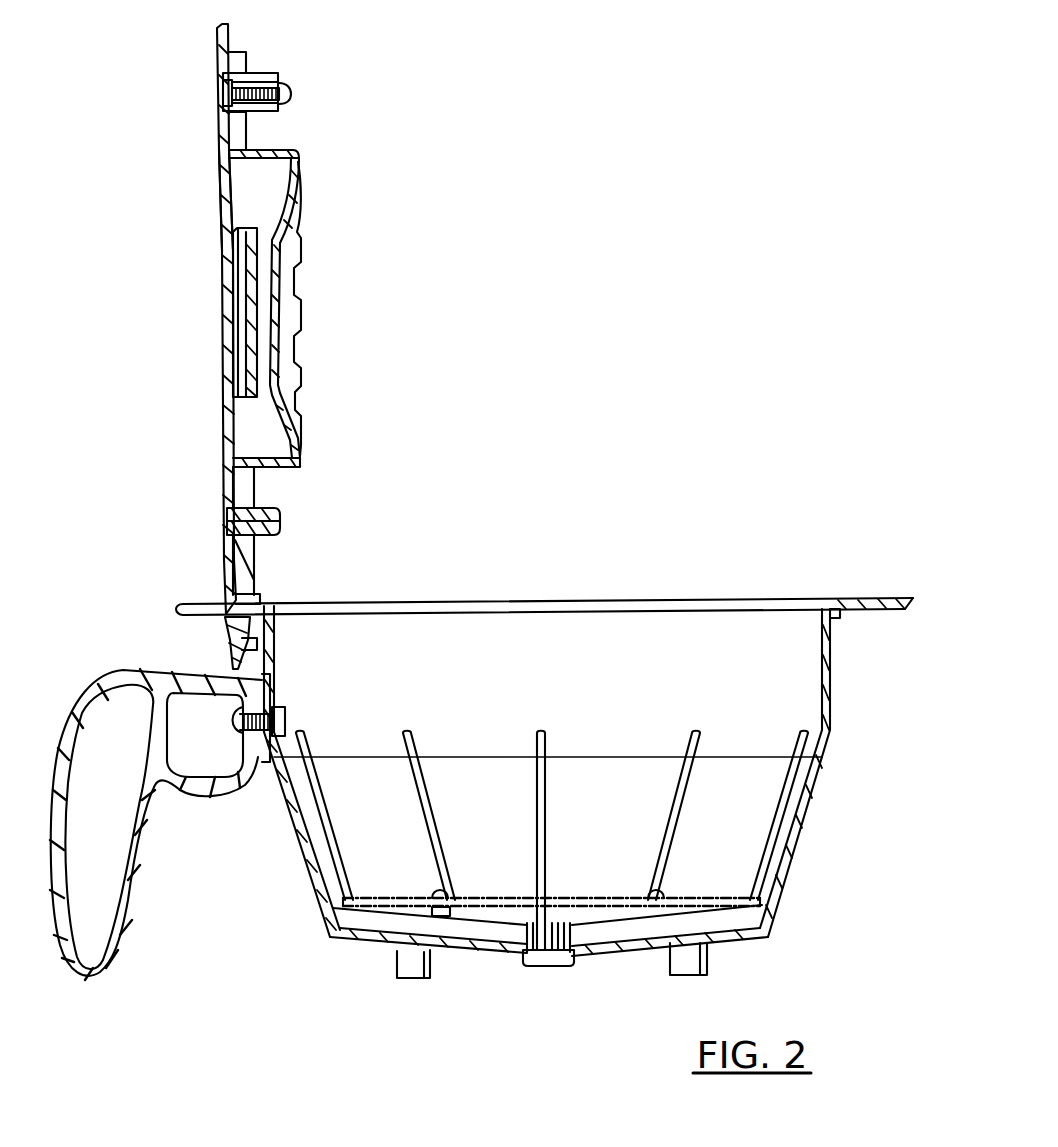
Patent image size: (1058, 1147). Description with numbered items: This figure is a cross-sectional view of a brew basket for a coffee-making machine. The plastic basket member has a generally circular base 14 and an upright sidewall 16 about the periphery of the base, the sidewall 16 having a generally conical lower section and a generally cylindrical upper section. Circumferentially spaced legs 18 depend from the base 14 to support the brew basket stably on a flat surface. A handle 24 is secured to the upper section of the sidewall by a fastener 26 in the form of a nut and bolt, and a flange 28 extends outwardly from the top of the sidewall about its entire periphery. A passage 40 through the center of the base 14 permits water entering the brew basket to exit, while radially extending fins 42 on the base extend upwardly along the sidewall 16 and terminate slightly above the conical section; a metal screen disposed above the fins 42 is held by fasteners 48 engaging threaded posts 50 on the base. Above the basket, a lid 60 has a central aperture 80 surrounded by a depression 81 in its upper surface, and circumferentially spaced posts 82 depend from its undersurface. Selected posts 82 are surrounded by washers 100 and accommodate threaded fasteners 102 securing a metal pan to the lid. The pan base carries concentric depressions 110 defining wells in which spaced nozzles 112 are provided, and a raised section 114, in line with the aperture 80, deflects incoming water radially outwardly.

The base 14 is at (501, 952).
The sidewall 16 is at (826, 790).
The legs 18 is at (410, 968).
The handle 24 is at (128, 867).
The fastener 26 is at (279, 708).
The flange 28 is at (886, 598).
The passage 40 is at (549, 960).
The fins 42 is at (547, 746).
The fasteners 48 is at (438, 892).
The threaded posts 50 is at (441, 917).
The lid 60 is at (404, 139).
The aperture 80 is at (243, 290).
The depression 81 is at (224, 210).
The posts 82 is at (268, 506).
The washers 100 is at (259, 80).
The threaded fasteners 102 is at (289, 94).
The depressions 110 is at (275, 405).
The nozzles 112 is at (302, 204).
The raised section 114 is at (270, 325).